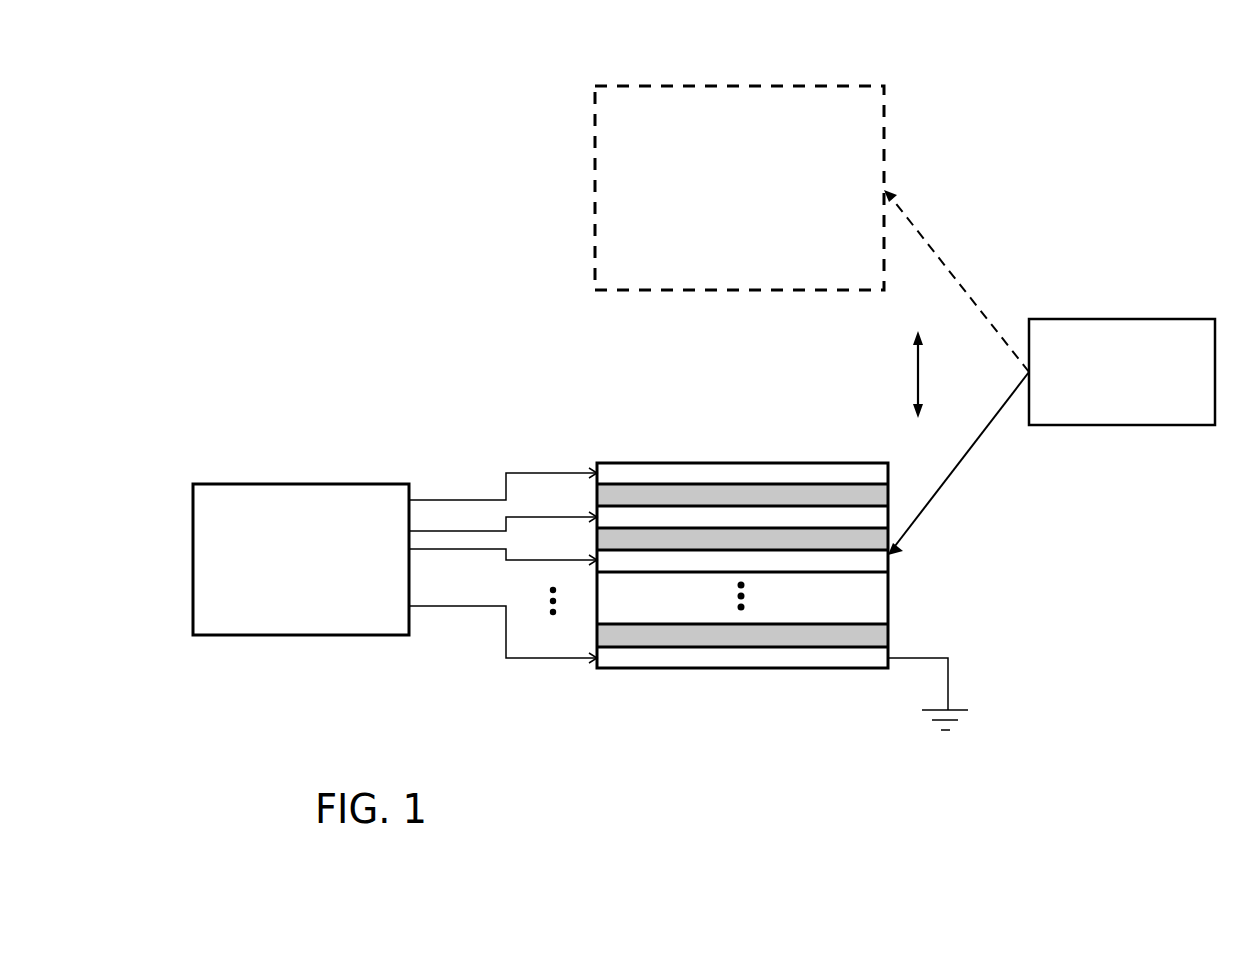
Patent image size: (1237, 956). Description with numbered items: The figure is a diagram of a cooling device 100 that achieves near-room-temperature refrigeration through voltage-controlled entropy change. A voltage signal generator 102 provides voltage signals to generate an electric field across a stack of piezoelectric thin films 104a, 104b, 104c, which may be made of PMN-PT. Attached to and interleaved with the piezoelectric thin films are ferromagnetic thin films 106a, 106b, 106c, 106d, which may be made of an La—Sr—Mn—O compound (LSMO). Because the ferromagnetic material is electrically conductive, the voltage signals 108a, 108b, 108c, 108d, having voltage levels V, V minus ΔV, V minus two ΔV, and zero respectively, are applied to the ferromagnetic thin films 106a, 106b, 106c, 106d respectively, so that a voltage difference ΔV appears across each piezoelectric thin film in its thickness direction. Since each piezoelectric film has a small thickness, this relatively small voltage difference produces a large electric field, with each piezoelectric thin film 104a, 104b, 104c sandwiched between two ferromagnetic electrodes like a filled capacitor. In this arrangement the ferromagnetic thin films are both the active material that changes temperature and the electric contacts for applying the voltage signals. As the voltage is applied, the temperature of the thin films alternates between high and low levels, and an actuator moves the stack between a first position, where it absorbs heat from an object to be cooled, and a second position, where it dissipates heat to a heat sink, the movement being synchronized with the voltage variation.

The cooling device 100 is at (348, 358).
The voltage signal generator 102 is at (312, 484).
The piezoelectric thin film 104a is at (616, 492).
The piezoelectric thin film 104b is at (664, 538).
The piezoelectric thin film 104c is at (675, 637).
The ferromagnetic thin film 106a is at (723, 475).
The ferromagnetic thin film 106b is at (783, 520).
The ferromagnetic thin film 106c is at (843, 560).
The ferromagnetic thin film 106d is at (740, 657).
The voltage signal 108a is at (467, 497).
The voltage signal 108b is at (488, 530).
The voltage signal 108c is at (488, 551).
The voltage signal 108d is at (470, 608).